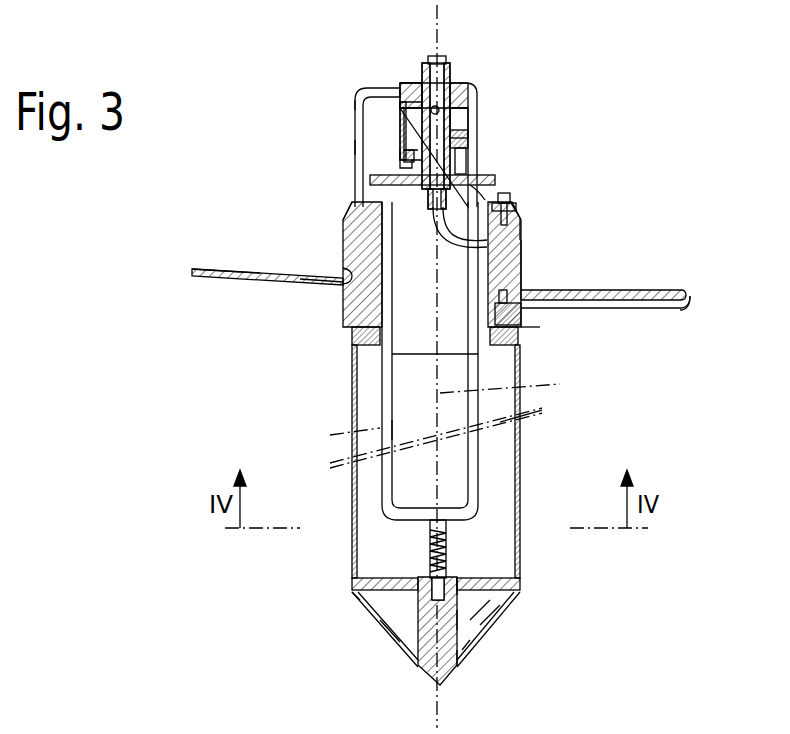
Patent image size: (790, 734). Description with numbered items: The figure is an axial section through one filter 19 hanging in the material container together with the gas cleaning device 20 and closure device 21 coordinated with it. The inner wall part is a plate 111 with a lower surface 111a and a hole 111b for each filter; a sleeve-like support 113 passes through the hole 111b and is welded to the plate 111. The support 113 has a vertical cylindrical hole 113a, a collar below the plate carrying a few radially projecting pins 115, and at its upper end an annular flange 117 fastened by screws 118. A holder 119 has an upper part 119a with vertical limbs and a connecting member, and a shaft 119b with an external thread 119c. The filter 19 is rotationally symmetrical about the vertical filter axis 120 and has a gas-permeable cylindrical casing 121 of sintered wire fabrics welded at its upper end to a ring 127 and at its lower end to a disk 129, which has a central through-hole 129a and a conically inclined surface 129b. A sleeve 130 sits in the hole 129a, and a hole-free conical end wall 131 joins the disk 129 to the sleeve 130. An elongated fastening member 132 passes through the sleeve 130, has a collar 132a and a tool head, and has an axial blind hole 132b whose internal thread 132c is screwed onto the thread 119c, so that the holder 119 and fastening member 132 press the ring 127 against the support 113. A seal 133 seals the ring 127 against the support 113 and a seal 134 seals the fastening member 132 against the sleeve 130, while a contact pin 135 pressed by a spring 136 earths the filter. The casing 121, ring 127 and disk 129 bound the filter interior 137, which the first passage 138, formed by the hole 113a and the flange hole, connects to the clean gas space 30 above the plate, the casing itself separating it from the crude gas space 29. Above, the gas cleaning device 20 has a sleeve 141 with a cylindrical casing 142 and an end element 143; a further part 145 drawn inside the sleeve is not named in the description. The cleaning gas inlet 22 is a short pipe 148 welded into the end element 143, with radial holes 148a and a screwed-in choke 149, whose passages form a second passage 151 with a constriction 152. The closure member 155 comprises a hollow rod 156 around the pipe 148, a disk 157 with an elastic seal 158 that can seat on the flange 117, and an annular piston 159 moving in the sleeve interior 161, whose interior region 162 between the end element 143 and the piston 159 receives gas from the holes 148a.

The filter 19 is at (349, 593).
The gas cleaning device 20 is at (348, 102).
The closure device 21 is at (350, 146).
The cleaning gas inlet 22 is at (424, 67).
The fluidizing and crude gas space 29 is at (526, 332).
The clean gas space 30 is at (524, 265).
The plate 111 is at (242, 280).
The lower surface 111a is at (317, 286).
The hole 111b is at (347, 273).
The support 113 is at (343, 227).
The hole 113a is at (345, 265).
The pins 115 is at (352, 348).
The annular flange 117 is at (516, 206).
The screws 118 is at (510, 194).
The holder 119 is at (382, 383).
The upper part 119a is at (392, 425).
The shaft 119b is at (430, 538).
The external thread 119c is at (422, 548).
The filter axis 120 is at (560, 385).
The casing 121 is at (544, 408).
The ring 127 is at (522, 345).
The disk 129 is at (425, 597).
The through-hole 129a is at (407, 597).
The surface 129b is at (505, 604).
The sleeve 130 is at (490, 630).
The end wall 131 is at (462, 648).
The fastening member 132 is at (444, 681).
The collar 132a is at (458, 663).
The blind hole 132b is at (458, 622).
The internal thread 132c is at (458, 580).
The seal 133 is at (523, 318).
The seal 134 is at (500, 583).
The contact pin 135 is at (693, 306).
The spring 136 is at (688, 294).
The filter interior 137 is at (522, 454).
The first passage 138 is at (345, 238).
The sleeve 141 is at (472, 88).
The casing 142 is at (352, 110).
The end element 143 is at (422, 82).
The cup 145 is at (402, 124).
The pipe 148 is at (457, 70).
The radial holes 148a is at (353, 92).
The choke 149 is at (487, 247).
The second axial passage 151 is at (443, 64).
The constriction 152 is at (522, 226).
The closure member 155 is at (374, 163).
The hollow rod 156 is at (462, 152).
The disk 157 is at (470, 175).
The seal 158 is at (496, 172).
The piston 159 is at (462, 128).
The interior 161 is at (404, 158).
The interior region 162 is at (440, 110).